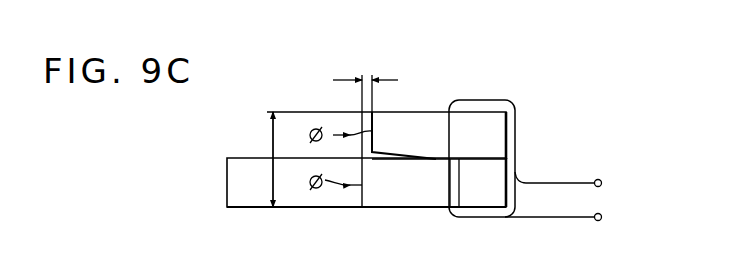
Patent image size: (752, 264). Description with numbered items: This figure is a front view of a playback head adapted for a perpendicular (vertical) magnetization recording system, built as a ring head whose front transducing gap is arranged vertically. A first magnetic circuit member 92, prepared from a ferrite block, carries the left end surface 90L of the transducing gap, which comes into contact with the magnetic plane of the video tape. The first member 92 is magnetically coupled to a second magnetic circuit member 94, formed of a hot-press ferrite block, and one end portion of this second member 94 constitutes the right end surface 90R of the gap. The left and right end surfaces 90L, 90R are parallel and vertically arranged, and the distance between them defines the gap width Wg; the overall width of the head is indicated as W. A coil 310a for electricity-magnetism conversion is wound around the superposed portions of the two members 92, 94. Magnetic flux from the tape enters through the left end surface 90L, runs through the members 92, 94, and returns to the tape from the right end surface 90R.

The second magnetic circuit member 94 is at (418, 122).
The first magnetic circuit member 92 is at (297, 198).
The left end surface of the transducing gap 90L is at (362, 196).
The right end surface of the transducing gap 90R is at (368, 117).
The coil 310a is at (503, 100).
The width of the transducing gap Wg is at (363, 75).
The track width W is at (263, 159).